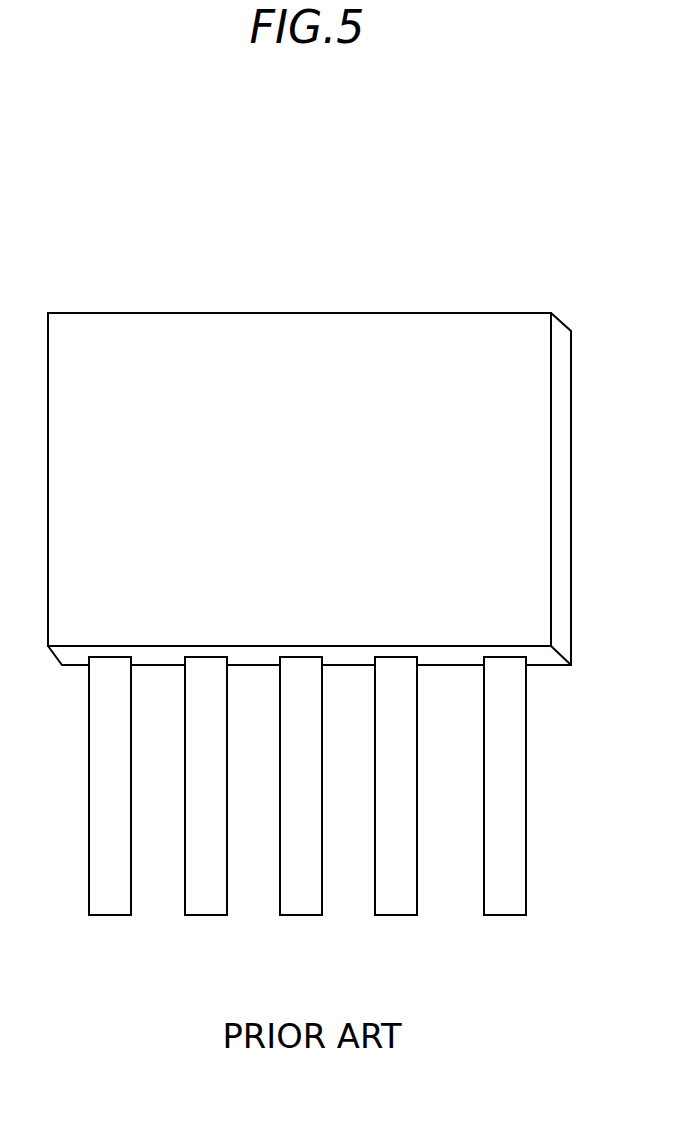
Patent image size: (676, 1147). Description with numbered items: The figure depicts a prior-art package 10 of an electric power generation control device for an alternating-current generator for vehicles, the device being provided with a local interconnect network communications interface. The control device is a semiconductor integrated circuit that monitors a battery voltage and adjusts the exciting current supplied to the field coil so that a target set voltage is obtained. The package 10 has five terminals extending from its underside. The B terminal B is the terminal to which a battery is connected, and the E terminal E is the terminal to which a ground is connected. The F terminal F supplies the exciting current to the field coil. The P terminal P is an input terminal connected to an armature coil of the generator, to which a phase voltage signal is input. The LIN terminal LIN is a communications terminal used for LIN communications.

The package 10 is at (283, 313).
The F terminal F is at (110, 805).
The B terminal B is at (206, 805).
The E terminal E is at (301, 805).
The LIN terminal LIN is at (396, 805).
The P terminal P is at (505, 805).